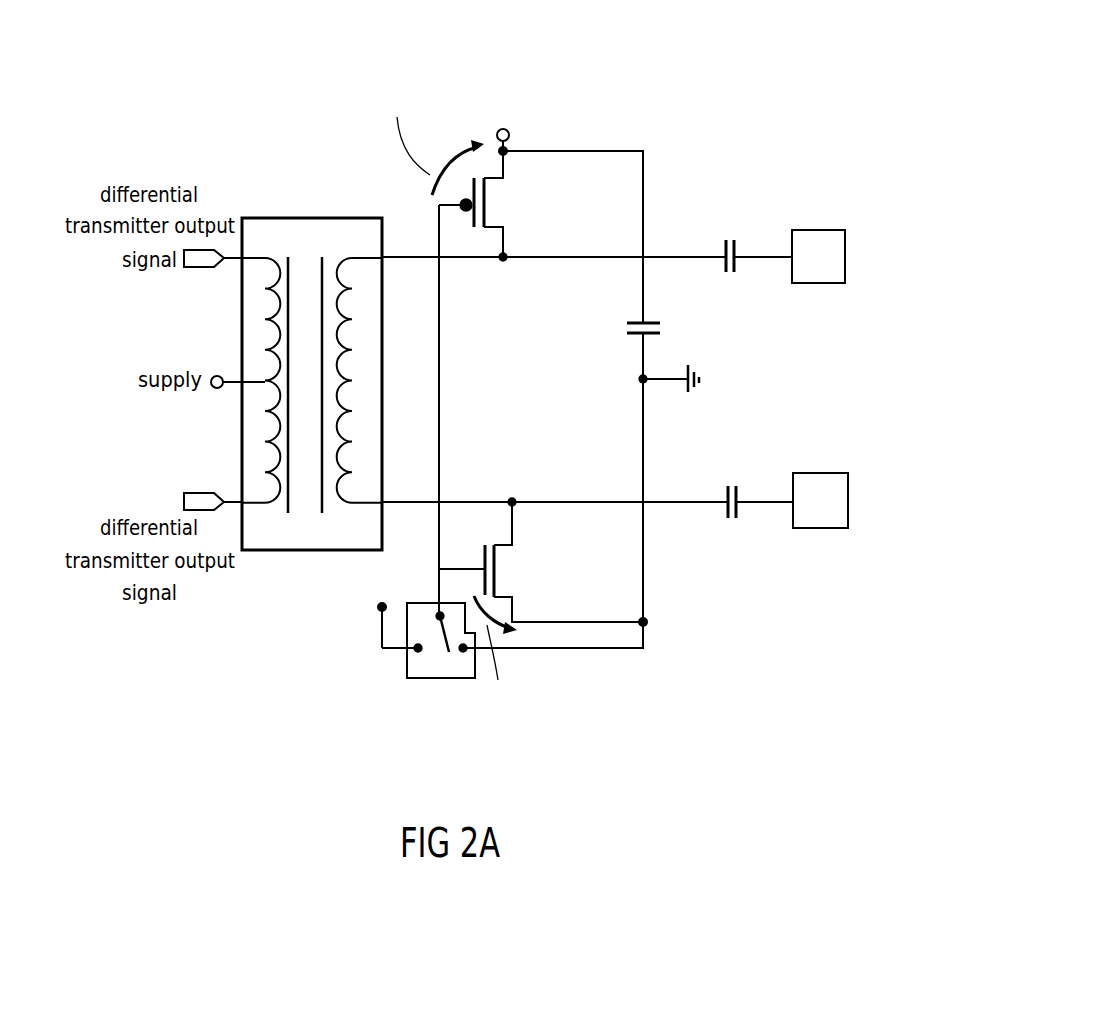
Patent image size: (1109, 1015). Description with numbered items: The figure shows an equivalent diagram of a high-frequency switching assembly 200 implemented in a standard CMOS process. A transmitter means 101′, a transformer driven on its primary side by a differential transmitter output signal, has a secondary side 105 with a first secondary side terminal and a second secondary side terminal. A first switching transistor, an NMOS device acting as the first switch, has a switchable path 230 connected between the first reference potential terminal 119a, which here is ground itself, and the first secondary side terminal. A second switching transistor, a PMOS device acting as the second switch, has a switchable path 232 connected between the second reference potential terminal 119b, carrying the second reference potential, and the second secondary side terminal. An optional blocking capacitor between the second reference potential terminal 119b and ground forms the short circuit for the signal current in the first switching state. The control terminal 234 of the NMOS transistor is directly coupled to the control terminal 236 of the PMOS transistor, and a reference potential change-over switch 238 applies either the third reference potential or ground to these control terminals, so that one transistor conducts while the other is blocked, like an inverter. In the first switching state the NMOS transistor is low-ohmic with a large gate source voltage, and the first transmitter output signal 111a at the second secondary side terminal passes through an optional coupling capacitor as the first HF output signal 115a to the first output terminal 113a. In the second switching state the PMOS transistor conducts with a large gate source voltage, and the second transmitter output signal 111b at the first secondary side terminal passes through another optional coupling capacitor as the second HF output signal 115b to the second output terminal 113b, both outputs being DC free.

The high-frequency switching assembly 200 is at (802, 60).
The transmitter means 101′ is at (296, 218).
The secondary side 105 is at (352, 376).
The first transmitter output signal 111a is at (481, 259).
The second transmitter output signal 111b is at (480, 502).
The first output terminal 113a is at (833, 230).
The second output terminal 113b is at (835, 528).
The first HF output signal 115a is at (757, 258).
The second HF output signal 115b is at (750, 501).
The first reference potential terminal 119a is at (665, 379).
The second reference potential terminal 119b is at (510, 137).
The switchable path 230 is at (494, 555).
The switchable path 232 is at (484, 190).
The control terminal 234 is at (470, 572).
The control terminal 236 is at (462, 208).
The reference potential change-over switch 238 is at (428, 678).